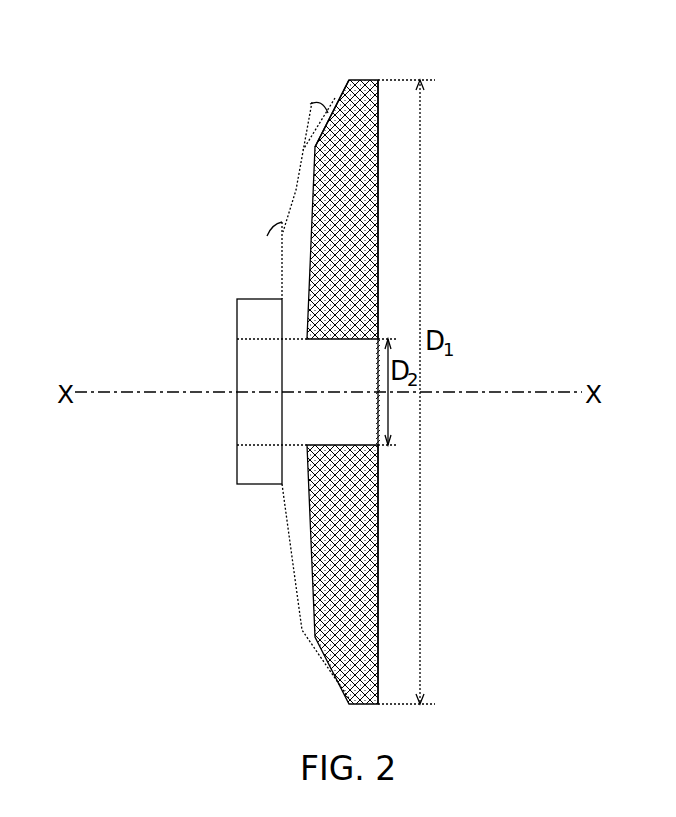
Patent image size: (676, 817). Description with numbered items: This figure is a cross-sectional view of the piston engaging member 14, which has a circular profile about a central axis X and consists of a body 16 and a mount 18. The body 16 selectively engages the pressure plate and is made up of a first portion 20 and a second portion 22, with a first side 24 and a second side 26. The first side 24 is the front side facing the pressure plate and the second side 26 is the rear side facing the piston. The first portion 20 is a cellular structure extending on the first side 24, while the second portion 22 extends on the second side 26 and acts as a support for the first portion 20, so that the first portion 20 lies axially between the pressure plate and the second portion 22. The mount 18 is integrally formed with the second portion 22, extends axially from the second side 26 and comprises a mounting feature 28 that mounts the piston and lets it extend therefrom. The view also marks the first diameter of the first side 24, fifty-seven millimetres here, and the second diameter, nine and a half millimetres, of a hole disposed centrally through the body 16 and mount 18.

The piston engaging member 14 is at (202, 132).
The body 16 is at (320, 93).
The mount 18 is at (248, 310).
The first portion 20 is at (373, 527).
The second portion 22 is at (292, 535).
The first side 24 is at (383, 260).
The second side 26 is at (263, 268).
The mounting feature 28 is at (246, 462).